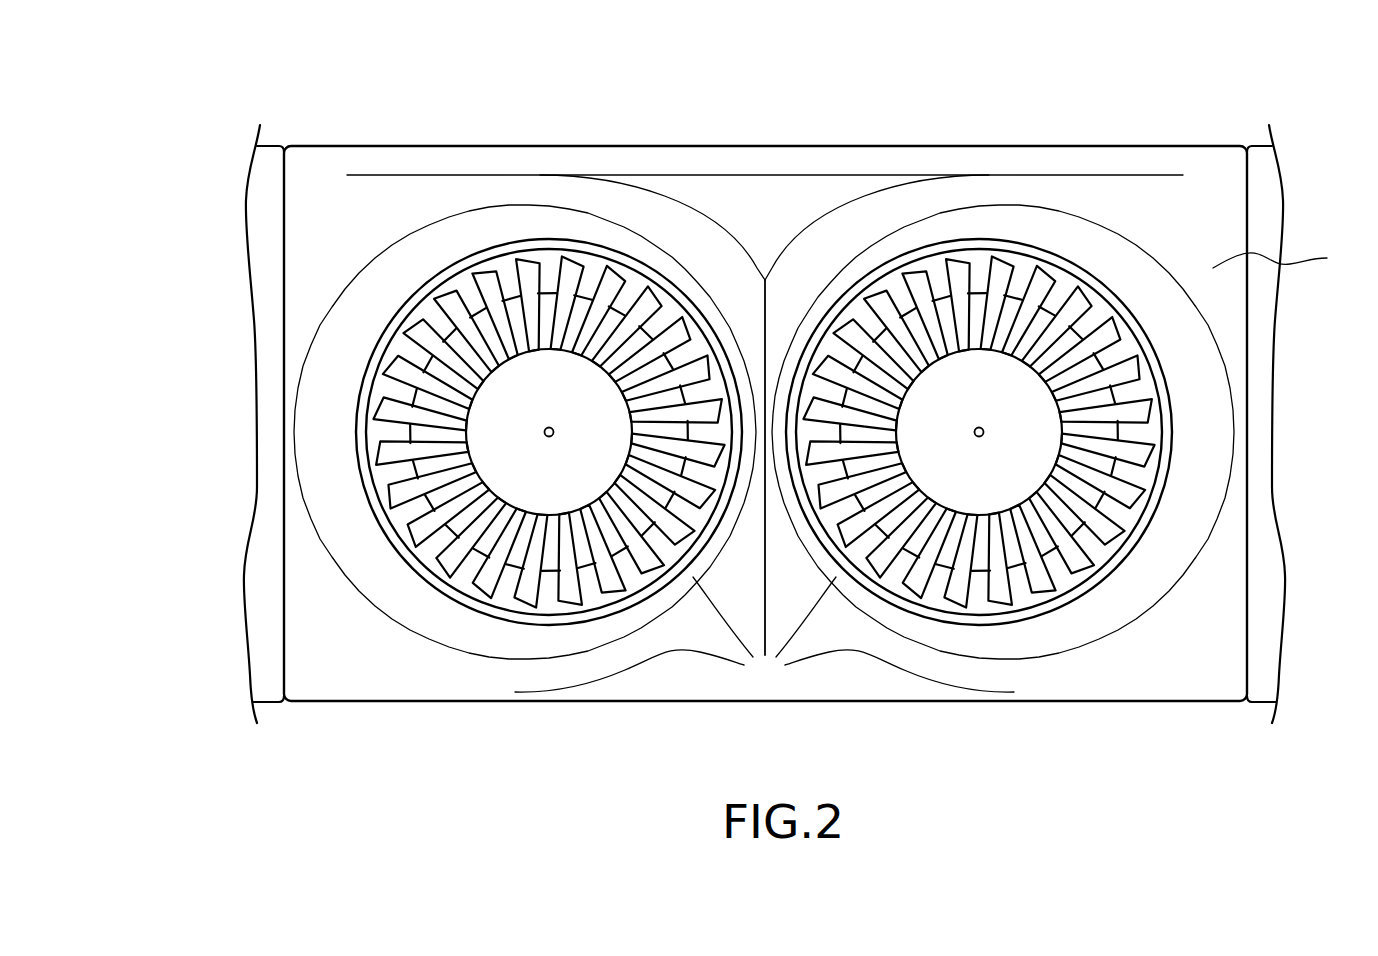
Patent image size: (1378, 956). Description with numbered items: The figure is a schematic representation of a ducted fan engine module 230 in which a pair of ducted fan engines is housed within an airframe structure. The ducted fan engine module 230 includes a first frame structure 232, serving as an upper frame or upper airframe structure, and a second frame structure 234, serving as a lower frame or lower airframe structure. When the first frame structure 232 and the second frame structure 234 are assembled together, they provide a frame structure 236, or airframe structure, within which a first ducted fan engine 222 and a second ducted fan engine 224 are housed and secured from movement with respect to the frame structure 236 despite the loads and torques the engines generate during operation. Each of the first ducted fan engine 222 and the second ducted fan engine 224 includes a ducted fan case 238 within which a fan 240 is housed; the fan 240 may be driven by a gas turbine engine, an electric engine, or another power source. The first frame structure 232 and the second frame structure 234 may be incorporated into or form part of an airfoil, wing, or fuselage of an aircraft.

The ducted fan engine module 230 is at (204, 177).
The first frame structure 232 is at (803, 144).
The second frame structure 234 is at (1007, 703).
The frame structure 236 is at (1289, 257).
The first ducted fan engine 222 is at (395, 617).
The second ducted fan engine 224 is at (1110, 614).
The ducted fan case 238 is at (529, 623).
The fan 240 is at (397, 449).